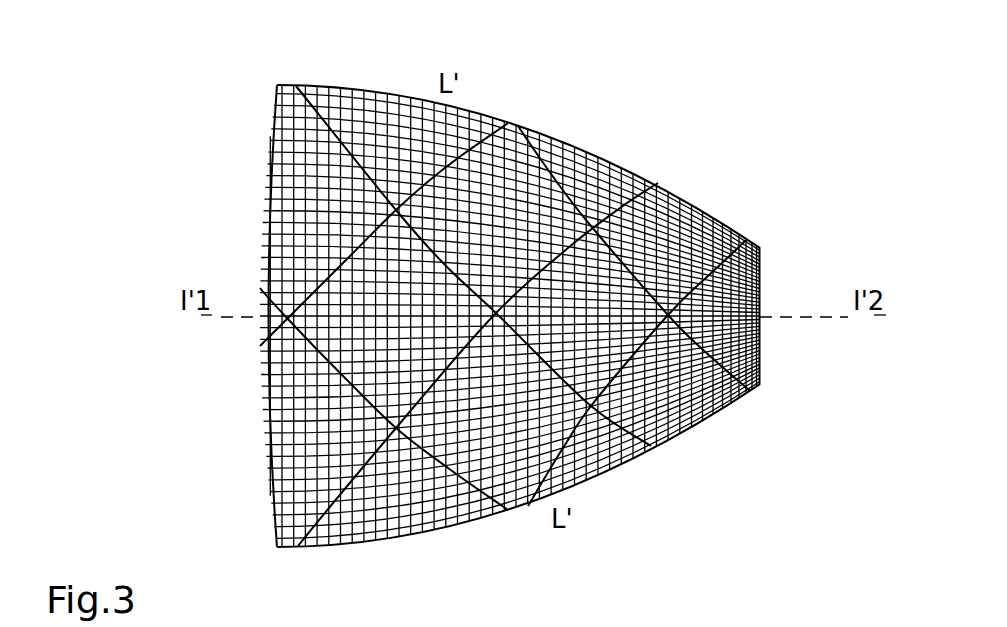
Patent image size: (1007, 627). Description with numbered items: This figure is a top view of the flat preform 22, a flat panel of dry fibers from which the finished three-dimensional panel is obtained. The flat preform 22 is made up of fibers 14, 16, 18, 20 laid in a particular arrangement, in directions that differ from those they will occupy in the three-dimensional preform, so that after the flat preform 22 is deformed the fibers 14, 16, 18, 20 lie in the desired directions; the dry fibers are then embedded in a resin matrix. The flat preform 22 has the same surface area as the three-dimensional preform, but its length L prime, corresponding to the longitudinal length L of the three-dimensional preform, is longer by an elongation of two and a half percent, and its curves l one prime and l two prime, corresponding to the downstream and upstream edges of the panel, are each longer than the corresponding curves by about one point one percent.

The fibers 14 is at (450, 480).
The fibers 16 is at (357, 527).
The fibers 18 is at (628, 434).
The fibers 20 is at (492, 114).
The flat preform 22 is at (548, 310).